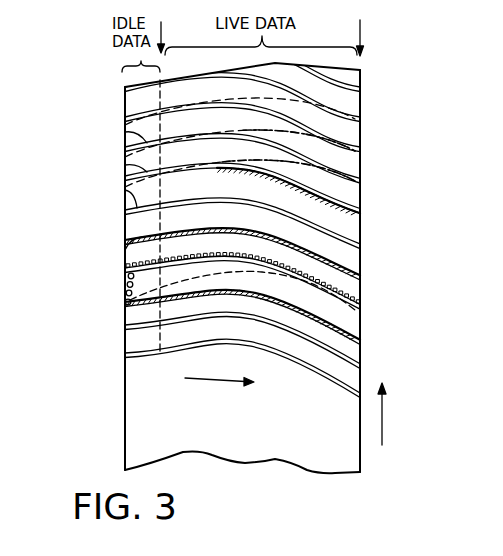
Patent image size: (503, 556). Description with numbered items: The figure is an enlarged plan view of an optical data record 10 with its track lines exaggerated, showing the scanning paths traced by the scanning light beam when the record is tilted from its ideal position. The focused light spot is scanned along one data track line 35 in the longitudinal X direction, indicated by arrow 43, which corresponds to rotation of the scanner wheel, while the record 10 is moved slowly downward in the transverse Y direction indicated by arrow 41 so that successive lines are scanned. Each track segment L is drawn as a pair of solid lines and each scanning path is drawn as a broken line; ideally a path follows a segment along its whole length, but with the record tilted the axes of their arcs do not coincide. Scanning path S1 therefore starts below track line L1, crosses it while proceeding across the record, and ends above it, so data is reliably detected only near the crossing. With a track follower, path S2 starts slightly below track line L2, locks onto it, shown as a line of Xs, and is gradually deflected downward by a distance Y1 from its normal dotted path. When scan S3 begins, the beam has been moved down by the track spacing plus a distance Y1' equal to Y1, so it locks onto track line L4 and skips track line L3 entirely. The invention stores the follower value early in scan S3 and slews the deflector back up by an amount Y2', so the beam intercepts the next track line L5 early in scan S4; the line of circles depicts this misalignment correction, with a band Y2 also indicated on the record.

The data record 10 is at (100, 343).
The data track line 35 is at (345, 92).
The track segment L is at (346, 112).
The track line L1 is at (125, 132).
The track line L2 is at (125, 165).
The track line L3 is at (125, 190).
The track line L4 is at (125, 250).
The track line L5 is at (125, 263).
The scanning path S1 is at (344, 152).
The scanning path S2 is at (342, 186).
The scanning path S3 is at (345, 241).
The scanning path S4 is at (346, 290).
The deflection distance Y1 is at (265, 187).
The second live data band Y2 is at (265, 290).
The offset distance Y1' is at (102, 236).
The slewing amount Y2' is at (101, 292).
The arrow 41 is at (382, 428).
The arrow 43 is at (208, 379).